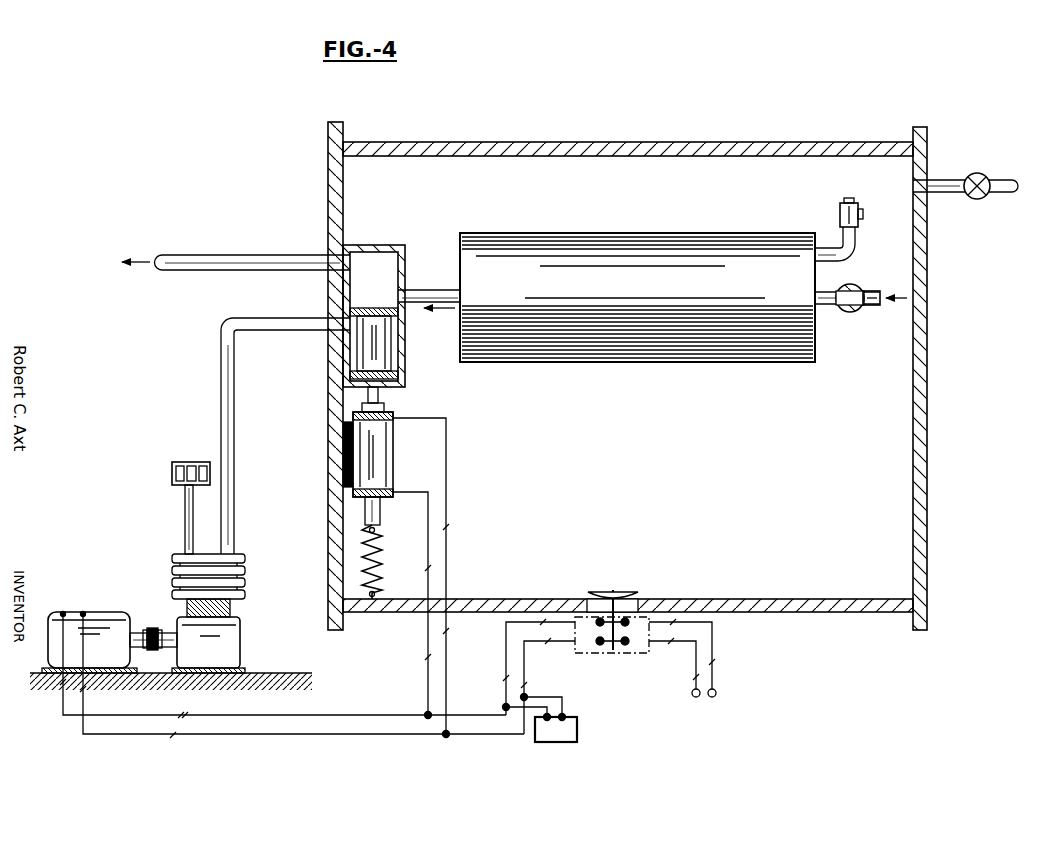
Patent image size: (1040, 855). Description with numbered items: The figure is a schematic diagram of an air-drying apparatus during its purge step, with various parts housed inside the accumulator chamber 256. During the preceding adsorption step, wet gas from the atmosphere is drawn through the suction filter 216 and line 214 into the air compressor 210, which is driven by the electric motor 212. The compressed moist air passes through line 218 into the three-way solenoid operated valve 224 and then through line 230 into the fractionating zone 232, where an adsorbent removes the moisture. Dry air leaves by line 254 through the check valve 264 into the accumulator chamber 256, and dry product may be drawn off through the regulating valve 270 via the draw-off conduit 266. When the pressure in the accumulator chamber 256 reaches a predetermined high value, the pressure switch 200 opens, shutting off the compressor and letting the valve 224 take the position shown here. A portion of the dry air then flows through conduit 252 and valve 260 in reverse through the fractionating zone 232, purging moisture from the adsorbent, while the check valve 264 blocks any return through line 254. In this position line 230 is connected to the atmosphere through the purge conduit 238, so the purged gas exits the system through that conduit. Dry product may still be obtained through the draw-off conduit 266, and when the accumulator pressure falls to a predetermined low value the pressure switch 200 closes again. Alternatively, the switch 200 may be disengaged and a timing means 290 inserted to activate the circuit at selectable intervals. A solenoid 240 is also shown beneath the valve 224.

The pressure switch 200 is at (608, 658).
The air compressor 210 is at (239, 641).
The electric motor 212 is at (101, 612).
The line 214 is at (185, 522).
The suction filter 216 is at (172, 465).
The line 218 is at (236, 450).
The three-way solenoid operated valve 224 is at (408, 378).
The line 230 is at (431, 292).
The fractionating zone 232 is at (571, 235).
The purge conduit 238 is at (238, 262).
The solenoid 240 is at (397, 450).
The conduit 252 is at (876, 291).
The line 254 is at (856, 250).
The accumulator chamber 256 is at (622, 141).
The valve 260 is at (857, 311).
The check valve 264 is at (839, 213).
The draw-off conduit 266 is at (1007, 193).
The regulating valve 270 is at (975, 198).
The timing means 290 is at (582, 733).